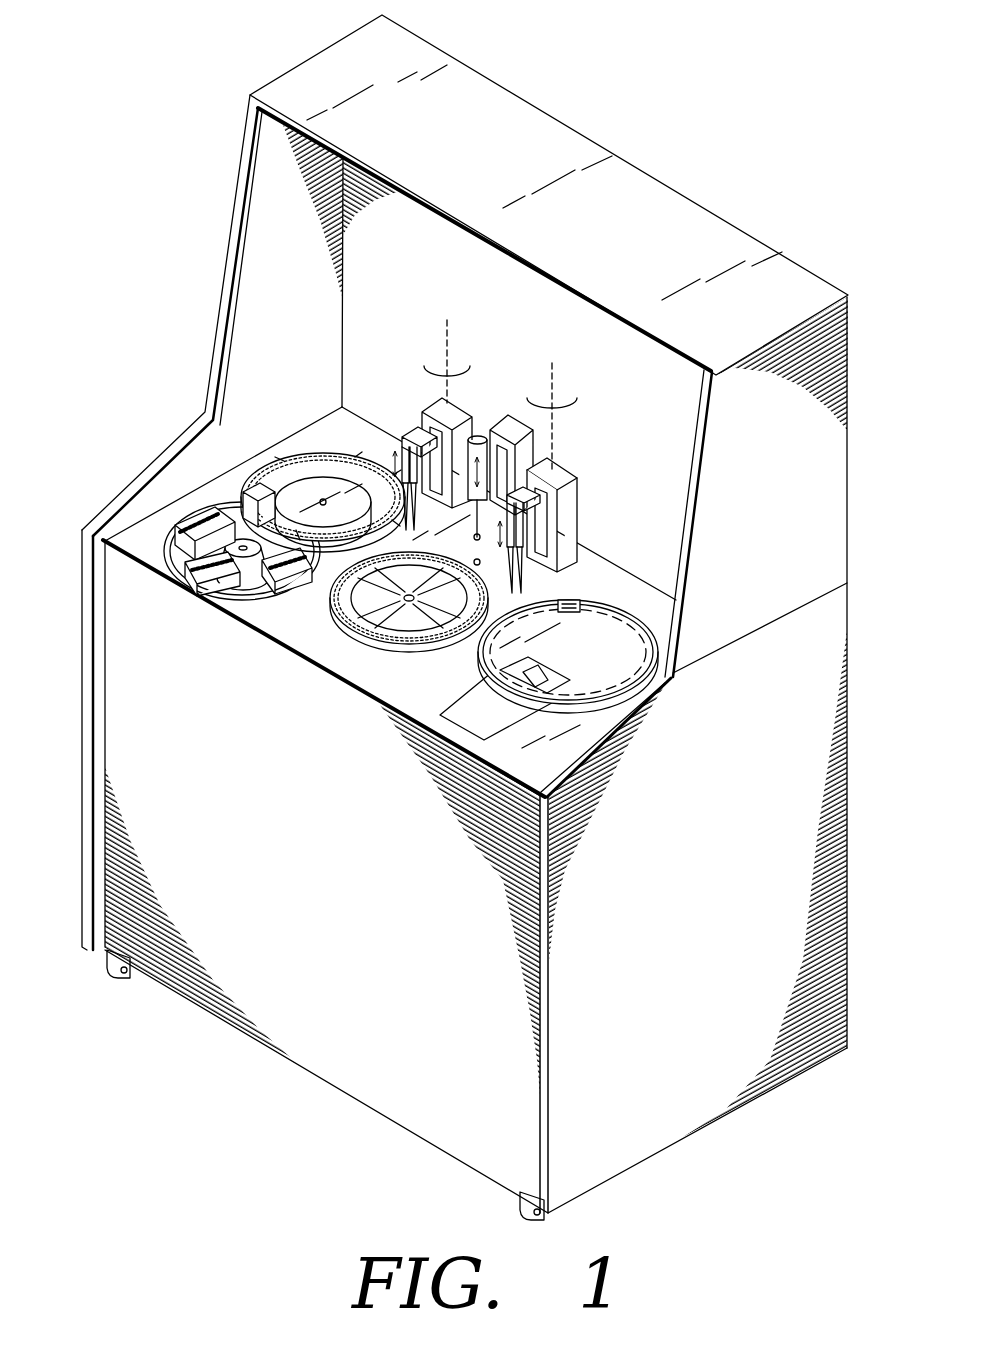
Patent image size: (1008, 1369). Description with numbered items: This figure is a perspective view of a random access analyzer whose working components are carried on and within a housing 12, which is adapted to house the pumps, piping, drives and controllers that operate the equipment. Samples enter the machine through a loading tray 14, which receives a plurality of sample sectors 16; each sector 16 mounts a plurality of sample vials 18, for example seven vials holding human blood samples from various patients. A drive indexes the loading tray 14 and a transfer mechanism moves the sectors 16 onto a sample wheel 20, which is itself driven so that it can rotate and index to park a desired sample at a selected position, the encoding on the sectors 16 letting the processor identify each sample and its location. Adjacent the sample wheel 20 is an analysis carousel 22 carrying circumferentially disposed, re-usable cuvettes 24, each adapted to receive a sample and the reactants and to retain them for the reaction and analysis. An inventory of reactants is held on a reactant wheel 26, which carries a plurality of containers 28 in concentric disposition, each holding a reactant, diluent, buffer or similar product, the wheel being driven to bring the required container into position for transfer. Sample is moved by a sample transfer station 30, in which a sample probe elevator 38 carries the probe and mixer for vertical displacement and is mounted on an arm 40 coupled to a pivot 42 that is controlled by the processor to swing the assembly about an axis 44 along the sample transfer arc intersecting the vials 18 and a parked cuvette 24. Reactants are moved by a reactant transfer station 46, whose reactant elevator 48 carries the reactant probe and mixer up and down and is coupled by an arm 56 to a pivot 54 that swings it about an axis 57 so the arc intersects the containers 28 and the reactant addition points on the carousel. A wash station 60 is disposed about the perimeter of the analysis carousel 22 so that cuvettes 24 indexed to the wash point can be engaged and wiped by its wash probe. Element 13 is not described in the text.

The housing 12 is at (782, 515).
The sample tray 13 is at (249, 483).
The loading tray 14 is at (235, 554).
The sample sectors 16 is at (247, 610).
The sample vials 18 is at (187, 573).
The sample wheel 20 is at (316, 430).
The analysis carousel 22 is at (402, 652).
The cuvettes 24 is at (362, 652).
The reactant wheel 26 is at (552, 636).
The containers 28 is at (572, 598).
The sample transfer station 30 is at (448, 420).
The sample probe elevator 38 is at (414, 432).
The arm 40 is at (437, 410).
The pivot 42 is at (515, 400).
The axis 44 is at (449, 323).
The reactant transfer station 46 is at (565, 469).
The reactant elevator 48 is at (565, 530).
The pivot 54 is at (560, 470).
The arm 56 is at (535, 492).
The axis 57 is at (560, 368).
The wash station 60 is at (417, 350).